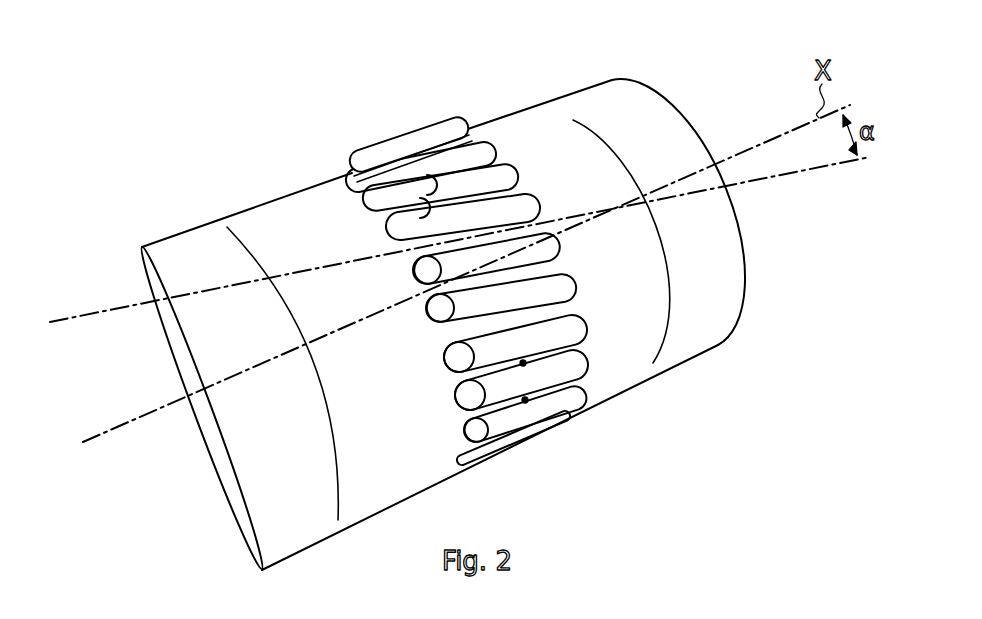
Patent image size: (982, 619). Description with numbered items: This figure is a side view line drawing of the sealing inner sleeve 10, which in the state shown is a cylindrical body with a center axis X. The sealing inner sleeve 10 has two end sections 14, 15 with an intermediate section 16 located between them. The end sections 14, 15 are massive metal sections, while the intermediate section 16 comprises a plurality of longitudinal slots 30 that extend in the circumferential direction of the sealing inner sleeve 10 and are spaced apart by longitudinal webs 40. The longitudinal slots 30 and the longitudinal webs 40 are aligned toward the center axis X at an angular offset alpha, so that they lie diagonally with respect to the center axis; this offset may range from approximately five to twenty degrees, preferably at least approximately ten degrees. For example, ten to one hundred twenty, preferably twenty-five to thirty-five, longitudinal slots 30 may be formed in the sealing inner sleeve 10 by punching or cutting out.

The sealing inner sleeve 10 is at (728, 33).
The end section 14 is at (611, 76).
The end section 15 is at (343, 167).
The intermediate section 16 is at (403, 133).
The longitudinal slots 30 is at (563, 329).
The longitudinal webs 40 is at (523, 363).